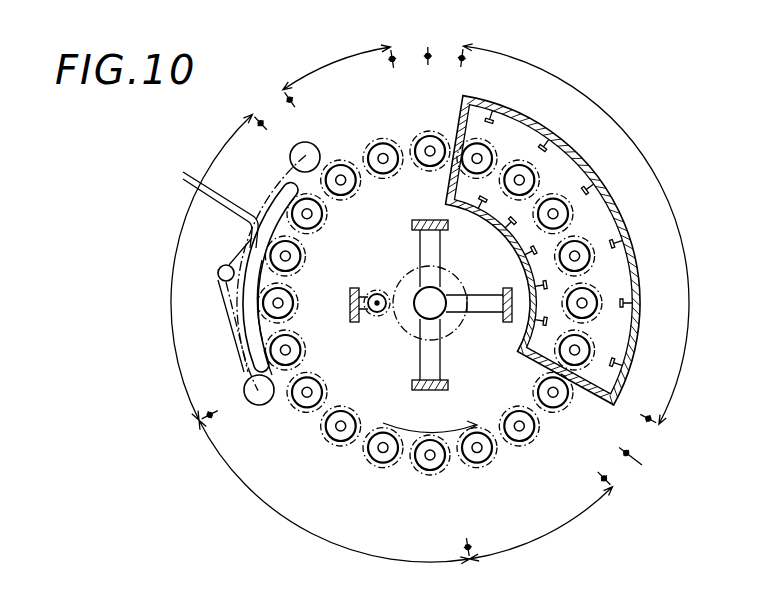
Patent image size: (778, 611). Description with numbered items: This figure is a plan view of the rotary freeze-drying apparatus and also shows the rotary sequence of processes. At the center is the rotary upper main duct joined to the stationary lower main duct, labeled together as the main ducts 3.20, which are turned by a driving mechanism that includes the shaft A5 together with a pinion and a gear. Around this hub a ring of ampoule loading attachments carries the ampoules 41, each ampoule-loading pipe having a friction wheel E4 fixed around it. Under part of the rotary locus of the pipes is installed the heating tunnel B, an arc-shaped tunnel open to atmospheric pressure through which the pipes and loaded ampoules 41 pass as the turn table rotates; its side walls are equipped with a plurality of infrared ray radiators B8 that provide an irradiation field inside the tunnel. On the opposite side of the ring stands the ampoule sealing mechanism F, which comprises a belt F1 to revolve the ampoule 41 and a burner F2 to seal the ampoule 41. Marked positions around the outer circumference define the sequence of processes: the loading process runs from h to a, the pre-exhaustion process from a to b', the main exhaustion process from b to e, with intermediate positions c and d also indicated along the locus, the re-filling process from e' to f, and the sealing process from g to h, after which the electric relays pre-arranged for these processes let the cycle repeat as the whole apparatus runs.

The heating tunnel B is at (577, 162).
The infrared ray radiators B8 is at (609, 205).
The ampoules 41 is at (418, 473).
The friction wheel E4 is at (298, 412).
The shaft A5 is at (378, 311).
The upper and lower main ducts 3.20 is at (424, 297).
The ampoule sealing mechanism F is at (216, 280).
The belt F1 is at (232, 330).
The burner F2 is at (253, 250).
The process position a is at (472, 564).
The process position b is at (640, 465).
The process position b' is at (614, 494).
The position marker c is at (661, 425).
The position marker d is at (461, 38).
The process position e is at (426, 37).
The process position e' is at (389, 40).
The process position f is at (281, 84).
The process position g is at (243, 114).
The process position h is at (193, 430).